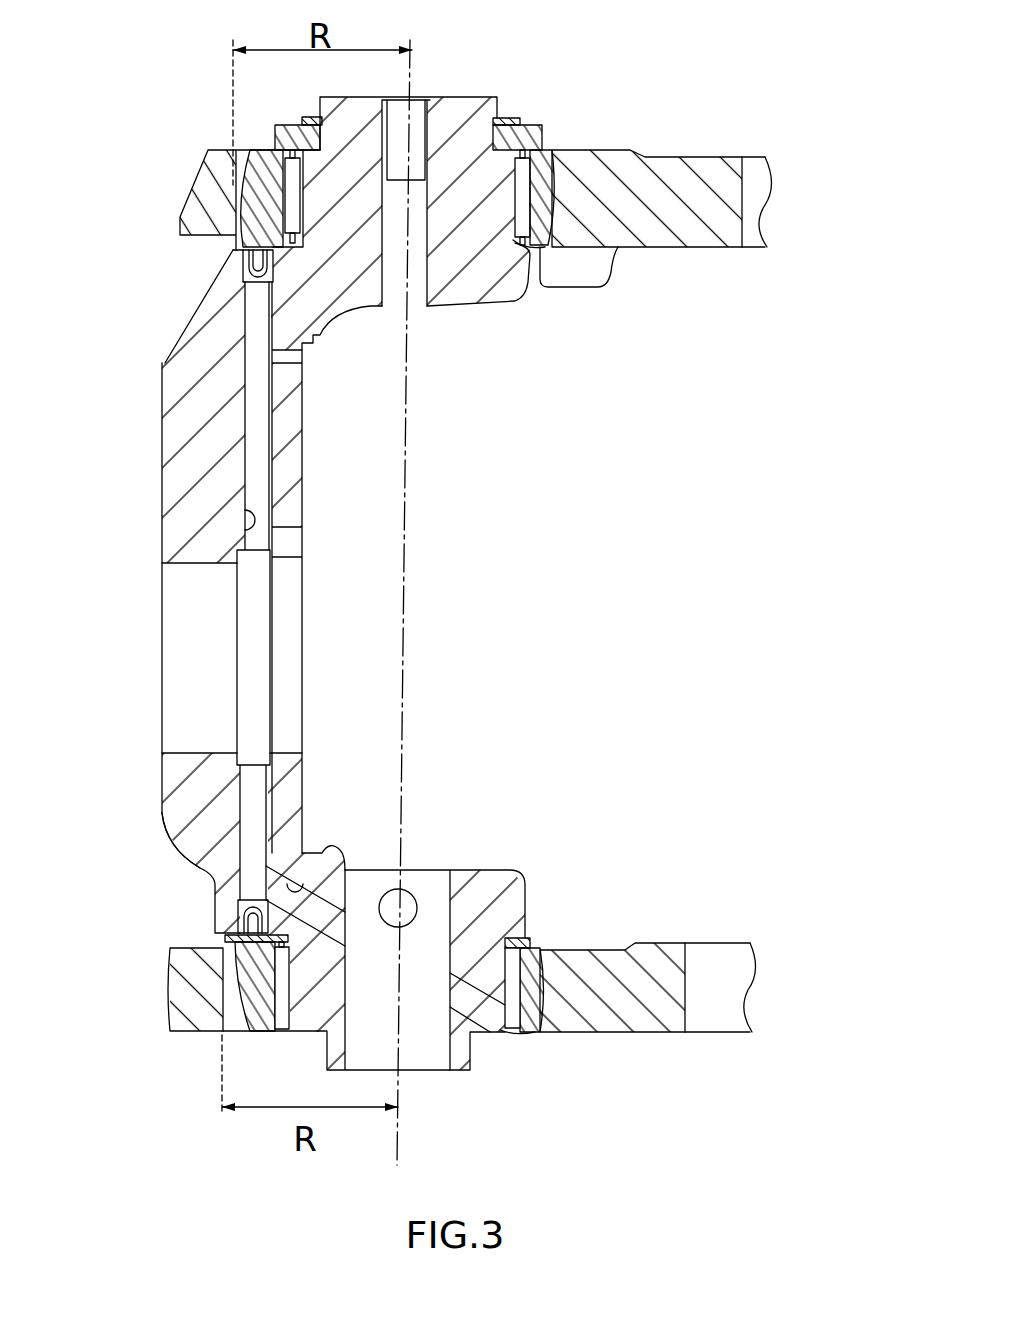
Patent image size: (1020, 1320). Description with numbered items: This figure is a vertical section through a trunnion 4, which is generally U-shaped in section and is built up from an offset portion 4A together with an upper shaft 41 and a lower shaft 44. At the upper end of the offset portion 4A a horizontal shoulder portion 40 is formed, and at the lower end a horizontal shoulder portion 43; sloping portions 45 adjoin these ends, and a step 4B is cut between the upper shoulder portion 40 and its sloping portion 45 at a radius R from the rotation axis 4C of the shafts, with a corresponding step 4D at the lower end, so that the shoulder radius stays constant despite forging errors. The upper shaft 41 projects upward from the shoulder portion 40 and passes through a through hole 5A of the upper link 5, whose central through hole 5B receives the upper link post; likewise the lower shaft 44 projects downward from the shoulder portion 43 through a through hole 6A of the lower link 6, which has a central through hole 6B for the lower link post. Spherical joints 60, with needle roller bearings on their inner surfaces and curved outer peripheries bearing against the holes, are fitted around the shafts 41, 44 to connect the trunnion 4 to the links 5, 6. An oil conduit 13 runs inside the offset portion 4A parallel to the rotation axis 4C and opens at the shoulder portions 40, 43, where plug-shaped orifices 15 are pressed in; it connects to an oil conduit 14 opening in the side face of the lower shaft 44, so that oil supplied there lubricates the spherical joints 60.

The trunnion 4 is at (152, 456).
The offset portion 4A is at (293, 473).
The step 4B is at (227, 252).
The rotation axis 4C is at (405, 680).
The step 4D is at (215, 935).
The upper link 5 is at (702, 144).
The through hole 5A is at (522, 302).
The through hole 5B is at (770, 216).
The lower link 6 is at (677, 936).
The through hole 6A is at (537, 950).
The through hole 6B is at (685, 1003).
The oil conduit 13 is at (240, 522).
The oil conduit 14 is at (318, 862).
The orifice 15 is at (243, 292).
The shoulder portion 40 is at (240, 178).
The shaft 41 is at (519, 118).
The shoulder portion 43 is at (238, 990).
The shaft 44 is at (283, 993).
The sloping portion 45 is at (175, 338).
The spherical joint 60 is at (545, 160).